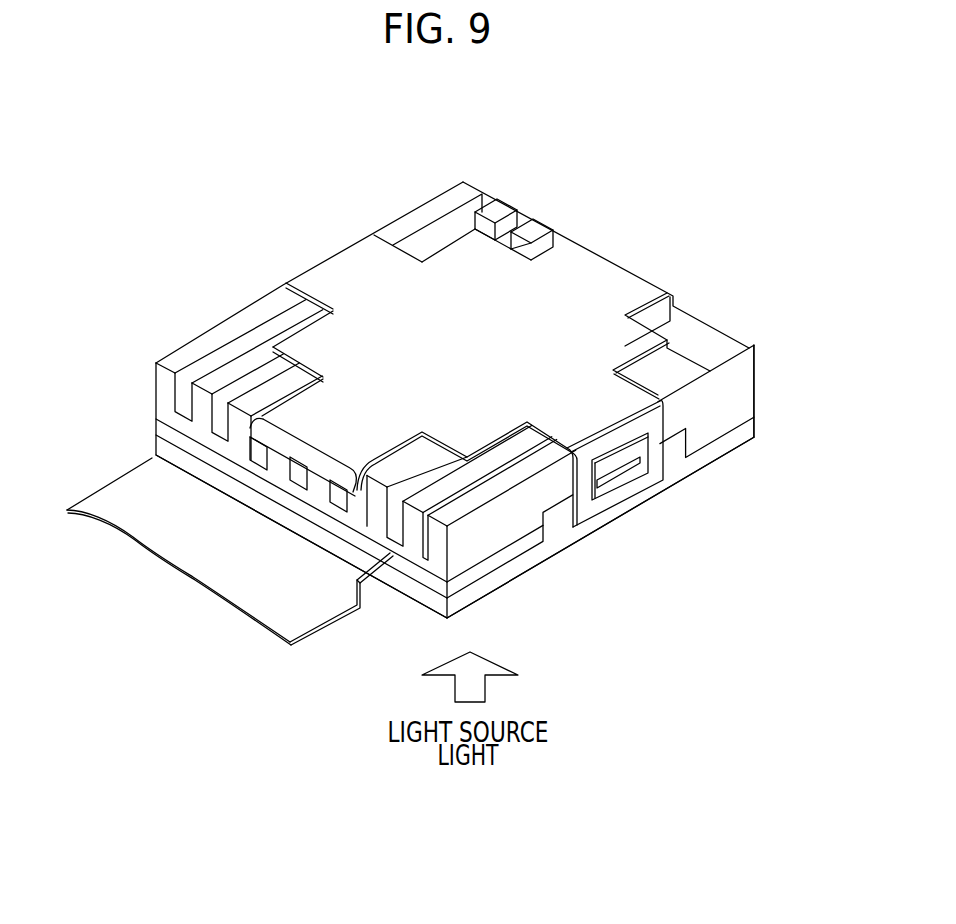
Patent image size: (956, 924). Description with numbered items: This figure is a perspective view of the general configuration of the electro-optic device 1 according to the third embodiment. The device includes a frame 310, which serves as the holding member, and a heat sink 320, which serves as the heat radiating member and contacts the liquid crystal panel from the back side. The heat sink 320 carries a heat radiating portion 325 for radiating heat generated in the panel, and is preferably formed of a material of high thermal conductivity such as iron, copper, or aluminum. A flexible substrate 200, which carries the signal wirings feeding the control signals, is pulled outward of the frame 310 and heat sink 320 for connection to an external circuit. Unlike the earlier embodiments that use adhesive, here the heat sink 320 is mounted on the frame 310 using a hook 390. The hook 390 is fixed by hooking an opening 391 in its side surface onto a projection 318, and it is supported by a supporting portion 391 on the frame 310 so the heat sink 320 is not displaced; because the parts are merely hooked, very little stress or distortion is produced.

The electro-optic device 1 is at (690, 196).
The flexible substrate 200 is at (110, 488).
The frame 310 is at (697, 464).
The projection 318 is at (617, 480).
The heat sink 320 is at (752, 383).
The heat radiating portion 325 is at (158, 351).
The hook 390 is at (583, 524).
The opening / supporting portion 391 is at (601, 462).